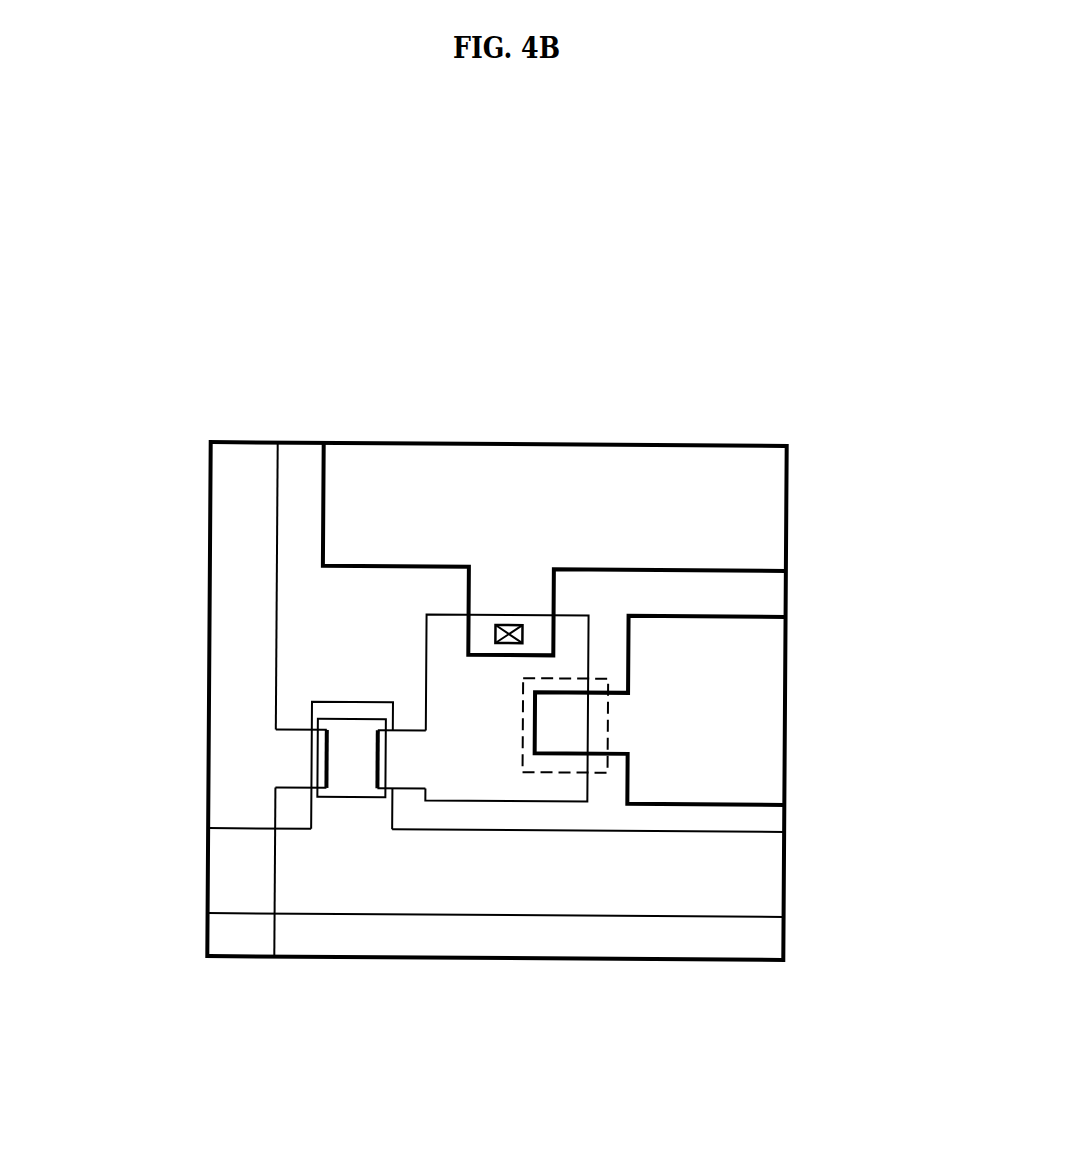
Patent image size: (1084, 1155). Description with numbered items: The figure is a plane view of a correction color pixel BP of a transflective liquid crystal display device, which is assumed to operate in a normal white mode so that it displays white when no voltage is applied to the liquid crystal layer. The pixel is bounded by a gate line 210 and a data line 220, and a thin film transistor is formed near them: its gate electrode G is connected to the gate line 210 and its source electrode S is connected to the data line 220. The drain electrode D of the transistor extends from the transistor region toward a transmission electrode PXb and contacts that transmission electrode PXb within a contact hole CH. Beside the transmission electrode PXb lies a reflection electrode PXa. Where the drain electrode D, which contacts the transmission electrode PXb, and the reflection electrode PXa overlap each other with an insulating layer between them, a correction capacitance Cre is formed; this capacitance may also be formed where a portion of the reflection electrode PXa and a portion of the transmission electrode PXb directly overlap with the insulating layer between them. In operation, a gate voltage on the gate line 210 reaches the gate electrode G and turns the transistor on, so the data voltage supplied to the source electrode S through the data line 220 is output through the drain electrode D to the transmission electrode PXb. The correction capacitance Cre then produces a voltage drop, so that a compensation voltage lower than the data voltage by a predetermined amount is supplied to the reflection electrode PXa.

The correction color pixel BP is at (98, 238).
The data line 220 is at (240, 467).
The gate line 210 is at (767, 865).
The gate electrode G is at (352, 825).
The source electrode S is at (288, 762).
The drain electrode D is at (427, 760).
The contact hole CH is at (508, 623).
The transmission electrode PXb is at (652, 477).
The reflection electrode PXa is at (755, 658).
The correction capacitance Cre is at (608, 725).